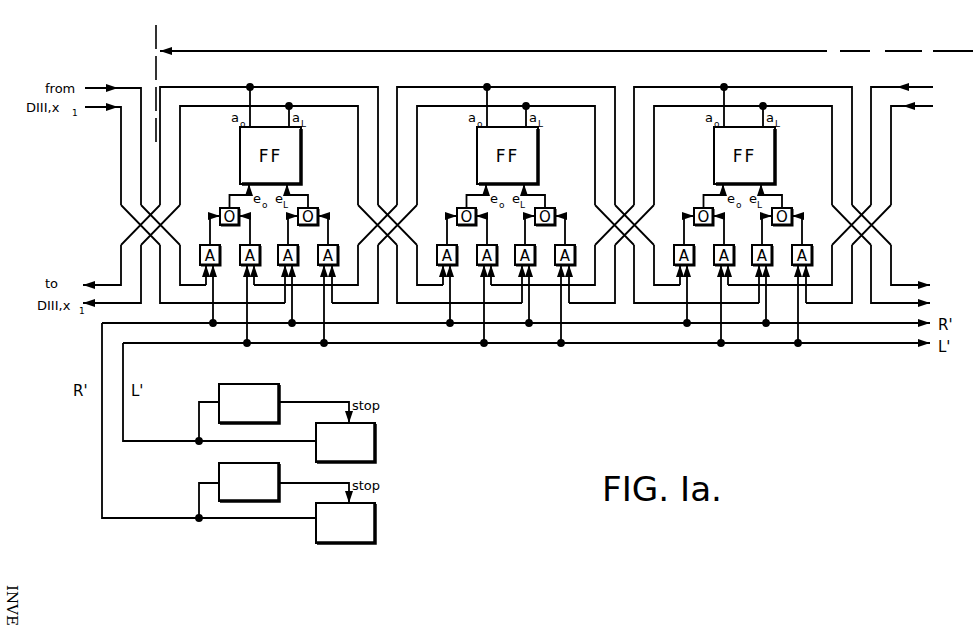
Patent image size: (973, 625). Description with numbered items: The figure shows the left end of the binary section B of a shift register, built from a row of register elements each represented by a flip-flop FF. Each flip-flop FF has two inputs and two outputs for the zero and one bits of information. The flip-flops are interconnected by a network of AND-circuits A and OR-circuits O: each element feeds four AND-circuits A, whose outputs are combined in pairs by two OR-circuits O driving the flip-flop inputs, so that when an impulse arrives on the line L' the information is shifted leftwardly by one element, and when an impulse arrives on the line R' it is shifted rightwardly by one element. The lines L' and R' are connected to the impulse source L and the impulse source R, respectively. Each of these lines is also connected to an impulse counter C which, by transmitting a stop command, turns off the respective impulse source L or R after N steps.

The flip-flop FF is at (507, 155).
The OR-circuit O is at (506, 217).
The AND-circuit A is at (506, 255).
The impulse counter C is at (249, 442).
The pulse source L is at (345, 442).
The pulse source R is at (345, 523).
The binary section B is at (564, 86).